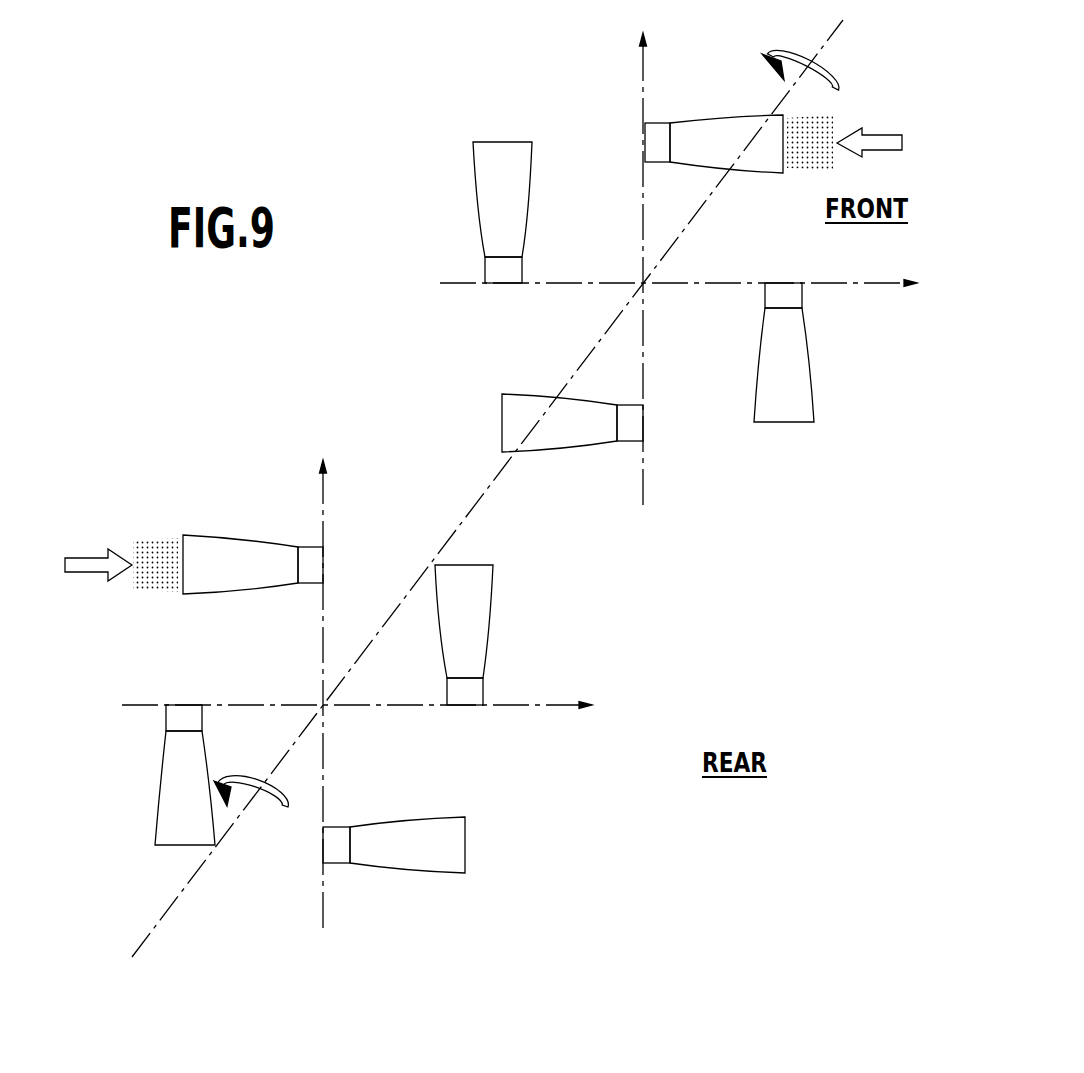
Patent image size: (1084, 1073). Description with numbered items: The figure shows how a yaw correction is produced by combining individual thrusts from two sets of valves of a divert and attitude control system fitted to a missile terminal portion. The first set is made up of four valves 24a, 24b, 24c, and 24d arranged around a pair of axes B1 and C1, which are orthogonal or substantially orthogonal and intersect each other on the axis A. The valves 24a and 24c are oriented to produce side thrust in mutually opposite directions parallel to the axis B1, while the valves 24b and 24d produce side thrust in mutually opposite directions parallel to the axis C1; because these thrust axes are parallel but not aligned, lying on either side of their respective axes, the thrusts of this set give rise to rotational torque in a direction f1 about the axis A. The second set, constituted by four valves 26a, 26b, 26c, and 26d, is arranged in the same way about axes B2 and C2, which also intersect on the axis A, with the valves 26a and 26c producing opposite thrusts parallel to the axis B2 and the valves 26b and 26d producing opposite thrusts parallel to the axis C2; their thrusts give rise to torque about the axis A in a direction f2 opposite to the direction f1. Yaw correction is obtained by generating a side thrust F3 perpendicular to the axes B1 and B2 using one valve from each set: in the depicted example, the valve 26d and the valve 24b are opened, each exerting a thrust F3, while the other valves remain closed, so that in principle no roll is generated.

The valve 24a is at (172, 803).
The valve 24b is at (243, 553).
The valve 24c is at (470, 608).
The valve 24d is at (433, 825).
The valve 26a is at (795, 381).
The valve 26b is at (532, 400).
The valve 26c is at (497, 187).
The valve 26d is at (726, 130).
The axis A is at (818, 53).
The direction of rotational torque f1 is at (251, 805).
The direction of rotational torque f2 is at (810, 84).
The side thrust F3 is at (483, 348).
The axis B1 is at (326, 677).
The axis B2 is at (647, 254).
The axis C1 is at (379, 705).
The axis C2 is at (701, 285).